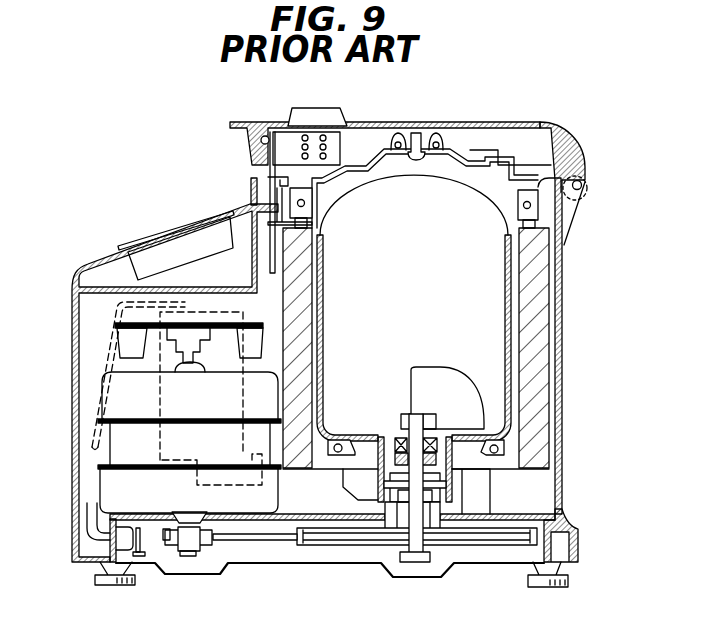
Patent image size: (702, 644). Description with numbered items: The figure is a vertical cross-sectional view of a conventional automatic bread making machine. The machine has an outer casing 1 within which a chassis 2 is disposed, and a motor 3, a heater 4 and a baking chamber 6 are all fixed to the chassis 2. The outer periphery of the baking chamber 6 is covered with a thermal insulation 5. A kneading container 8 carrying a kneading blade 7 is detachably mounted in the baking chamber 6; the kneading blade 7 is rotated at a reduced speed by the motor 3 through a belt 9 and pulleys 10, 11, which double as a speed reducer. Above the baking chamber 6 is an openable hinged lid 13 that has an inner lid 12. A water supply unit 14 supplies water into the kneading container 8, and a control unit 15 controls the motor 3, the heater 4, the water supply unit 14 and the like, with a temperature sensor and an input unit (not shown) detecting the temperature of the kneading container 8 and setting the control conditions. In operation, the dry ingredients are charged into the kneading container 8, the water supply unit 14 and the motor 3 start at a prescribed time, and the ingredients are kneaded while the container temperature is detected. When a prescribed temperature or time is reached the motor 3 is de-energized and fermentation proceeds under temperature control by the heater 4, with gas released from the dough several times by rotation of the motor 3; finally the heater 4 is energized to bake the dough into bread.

The casing 1 is at (562, 328).
The chassis 2 is at (555, 510).
The motor 3 is at (127, 439).
The heater 4 is at (528, 207).
The thermal insulation 5 is at (533, 362).
The baking chamber 6 is at (515, 313).
The kneading blade 7 is at (465, 393).
The kneading container 8 is at (496, 292).
The belt 9 is at (267, 540).
The pulley 10 is at (491, 545).
The pulley 11 is at (208, 541).
The inner lid 12 is at (486, 174).
The hinged lid 13 is at (468, 123).
The water supply unit 14 is at (103, 392).
The control unit 15 is at (175, 245).